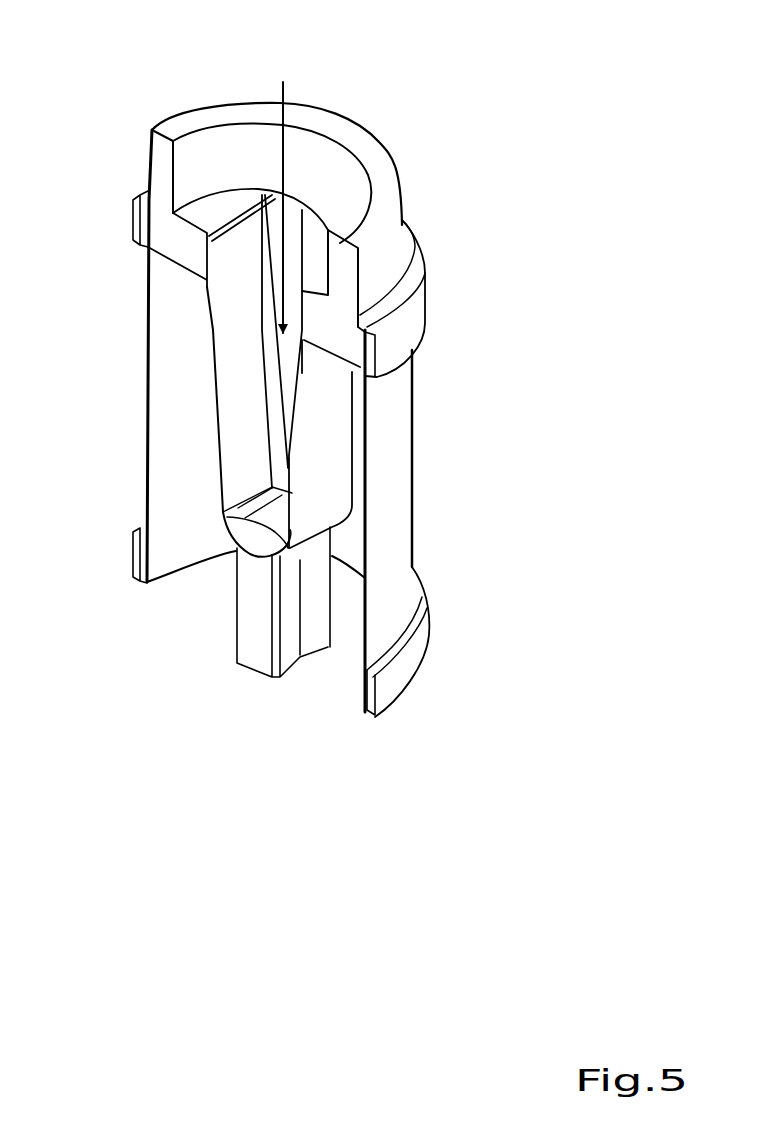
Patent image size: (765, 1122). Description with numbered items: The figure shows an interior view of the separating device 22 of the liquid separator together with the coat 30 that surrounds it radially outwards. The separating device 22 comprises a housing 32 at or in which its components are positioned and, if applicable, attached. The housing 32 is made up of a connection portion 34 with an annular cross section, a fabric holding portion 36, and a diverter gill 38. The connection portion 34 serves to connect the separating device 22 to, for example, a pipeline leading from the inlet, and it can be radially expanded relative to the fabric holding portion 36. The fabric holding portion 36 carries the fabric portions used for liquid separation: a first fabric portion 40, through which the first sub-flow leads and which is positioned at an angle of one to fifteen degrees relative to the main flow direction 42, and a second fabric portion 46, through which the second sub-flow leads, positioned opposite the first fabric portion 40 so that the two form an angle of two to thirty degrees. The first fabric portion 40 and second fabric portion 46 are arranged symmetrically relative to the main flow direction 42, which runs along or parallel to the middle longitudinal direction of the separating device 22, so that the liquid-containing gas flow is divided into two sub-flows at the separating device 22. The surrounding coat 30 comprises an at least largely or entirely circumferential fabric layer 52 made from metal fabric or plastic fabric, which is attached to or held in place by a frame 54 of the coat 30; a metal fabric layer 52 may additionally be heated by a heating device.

The separating device 22 is at (120, 125).
The coat 30 is at (472, 587).
The housing 32 is at (442, 166).
The connection portion 34 is at (377, 266).
The fabric holding portion 36 is at (168, 333).
The diverter gill 38 is at (250, 622).
The first fabric portion 40 is at (240, 418).
The main flow direction 42 is at (283, 108).
The second fabric portion 46 is at (318, 457).
The fabric layer 52 is at (393, 513).
The frame 54 is at (393, 683).